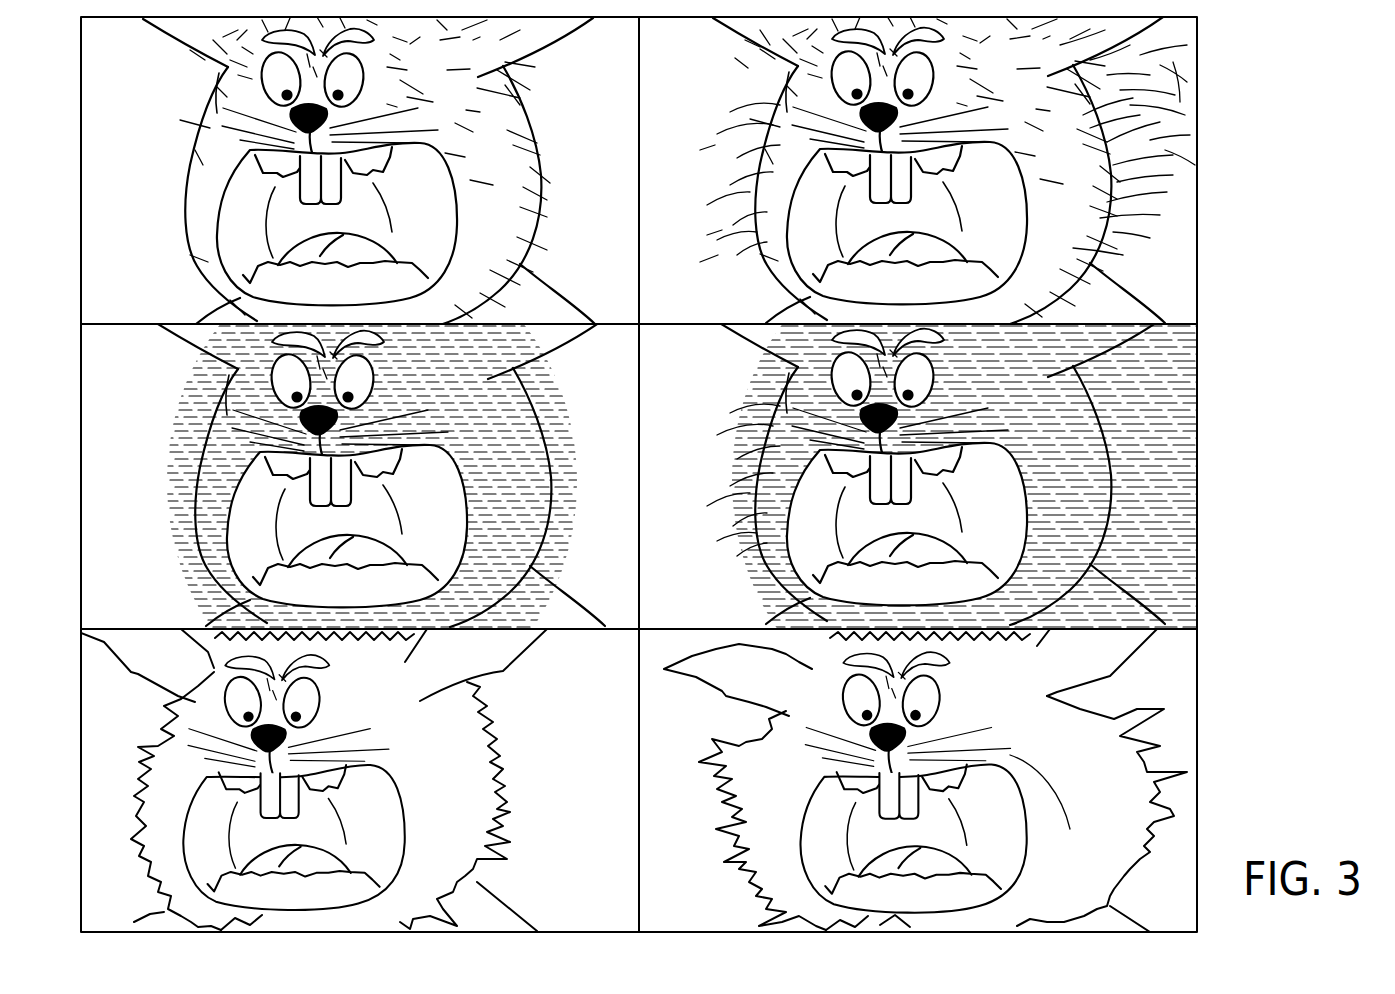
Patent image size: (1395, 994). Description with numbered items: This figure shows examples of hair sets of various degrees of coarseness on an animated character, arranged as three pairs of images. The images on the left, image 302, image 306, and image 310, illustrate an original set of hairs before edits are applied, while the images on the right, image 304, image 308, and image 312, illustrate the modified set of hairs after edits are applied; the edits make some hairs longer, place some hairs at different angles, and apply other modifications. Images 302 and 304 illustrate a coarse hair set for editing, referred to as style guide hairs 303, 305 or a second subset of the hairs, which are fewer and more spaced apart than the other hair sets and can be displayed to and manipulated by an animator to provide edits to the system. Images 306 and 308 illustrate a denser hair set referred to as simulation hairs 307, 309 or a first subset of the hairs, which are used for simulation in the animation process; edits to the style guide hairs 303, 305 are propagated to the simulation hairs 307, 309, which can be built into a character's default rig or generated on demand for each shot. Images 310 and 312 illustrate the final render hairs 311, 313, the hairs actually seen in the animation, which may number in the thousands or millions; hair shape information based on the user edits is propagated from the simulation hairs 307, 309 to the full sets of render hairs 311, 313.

The image 302 is at (343, 171).
The style guide hairs 303 is at (186, 233).
The image 304 is at (922, 170).
The style guide hairs 305 is at (740, 226).
The image 306 is at (347, 473).
The simulation hairs 307 is at (200, 578).
The image 308 is at (918, 472).
The simulation hairs 309 is at (705, 497).
The image 310 is at (314, 780).
The render hairs 311 is at (136, 860).
The image 312 is at (917, 780).
The render hairs 313 is at (735, 864).